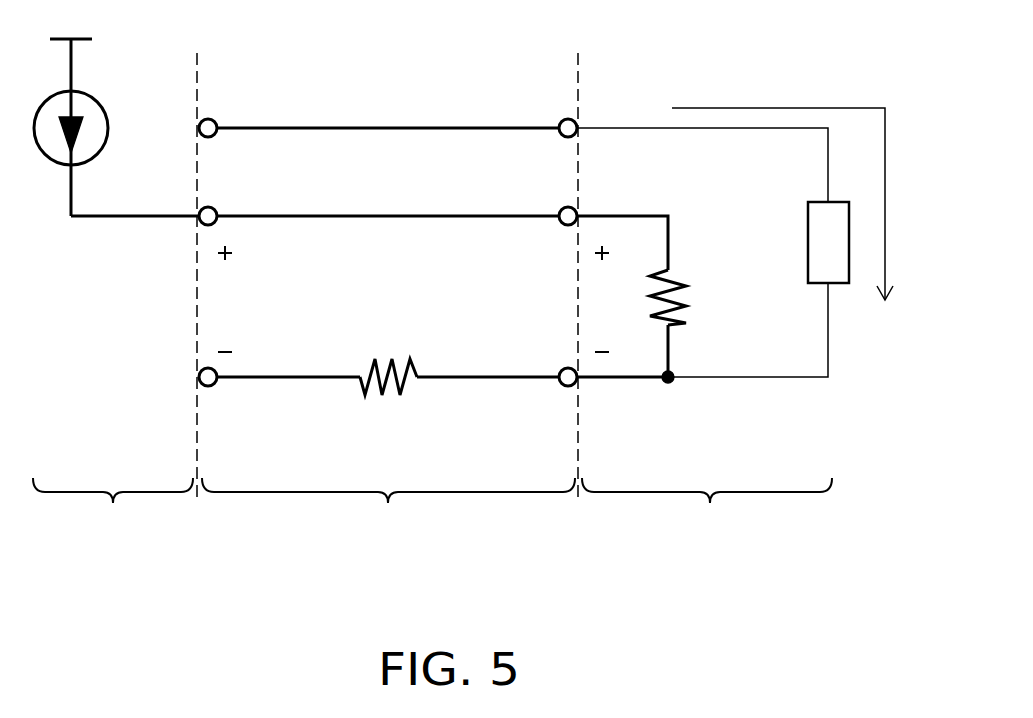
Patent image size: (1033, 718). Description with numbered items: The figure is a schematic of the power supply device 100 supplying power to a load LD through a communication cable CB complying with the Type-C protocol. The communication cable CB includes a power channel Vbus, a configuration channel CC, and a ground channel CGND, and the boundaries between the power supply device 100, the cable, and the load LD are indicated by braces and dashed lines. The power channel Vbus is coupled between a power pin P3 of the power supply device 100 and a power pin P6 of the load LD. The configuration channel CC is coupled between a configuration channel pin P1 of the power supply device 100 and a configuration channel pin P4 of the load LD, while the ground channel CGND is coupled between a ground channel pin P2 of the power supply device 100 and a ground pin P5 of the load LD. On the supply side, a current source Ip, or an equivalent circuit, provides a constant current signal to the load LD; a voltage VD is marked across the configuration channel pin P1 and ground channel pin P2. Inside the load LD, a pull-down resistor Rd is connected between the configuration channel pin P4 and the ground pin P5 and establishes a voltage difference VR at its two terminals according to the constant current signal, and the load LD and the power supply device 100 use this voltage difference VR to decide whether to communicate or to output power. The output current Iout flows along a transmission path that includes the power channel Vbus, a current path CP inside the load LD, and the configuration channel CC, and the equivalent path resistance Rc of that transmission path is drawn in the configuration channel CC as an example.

The power supply device 100 is at (113, 509).
The communication cable CB is at (388, 509).
The load LD is at (707, 509).
The current source Ip is at (115, 127).
The output current Iout is at (806, 204).
The configuration channel pin P1 is at (212, 209).
The ground channel pin P2 is at (213, 386).
The power pin P3 is at (212, 121).
The configuration channel pin P4 is at (564, 208).
The ground pin P5 is at (563, 387).
The power pin P6 is at (564, 120).
The power channel Vbus is at (382, 125).
The configuration channel CC is at (386, 212).
The ground channel CGND is at (308, 374).
The equivalent path resistance Rc is at (388, 359).
The pull-down resistor Rd is at (651, 299).
The current path CP is at (808, 240).
The voltage difference VD is at (228, 299).
The voltage difference VR is at (604, 299).